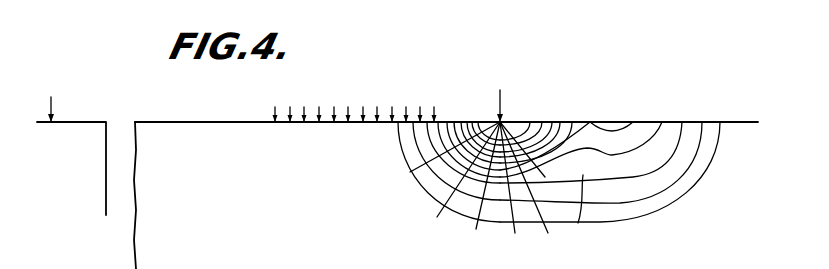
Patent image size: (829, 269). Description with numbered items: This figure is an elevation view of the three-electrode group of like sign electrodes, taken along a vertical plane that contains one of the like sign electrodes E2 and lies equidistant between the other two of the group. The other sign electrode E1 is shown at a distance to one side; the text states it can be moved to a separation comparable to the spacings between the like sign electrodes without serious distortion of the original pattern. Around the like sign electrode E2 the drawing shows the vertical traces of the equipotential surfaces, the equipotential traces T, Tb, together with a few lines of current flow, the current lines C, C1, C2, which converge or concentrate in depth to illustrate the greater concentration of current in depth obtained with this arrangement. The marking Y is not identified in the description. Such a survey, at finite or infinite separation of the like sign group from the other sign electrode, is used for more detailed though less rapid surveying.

The other sign electrode E1 is at (59, 96).
The like sign electrode E2 is at (502, 107).
The surface load (distributed force arrows) Y is at (370, 107).
The current line C is at (412, 171).
The current line C1 is at (478, 228).
The current line C2 is at (548, 233).
The equipotential trace T is at (537, 121).
The equipotential trace Tb is at (583, 175).